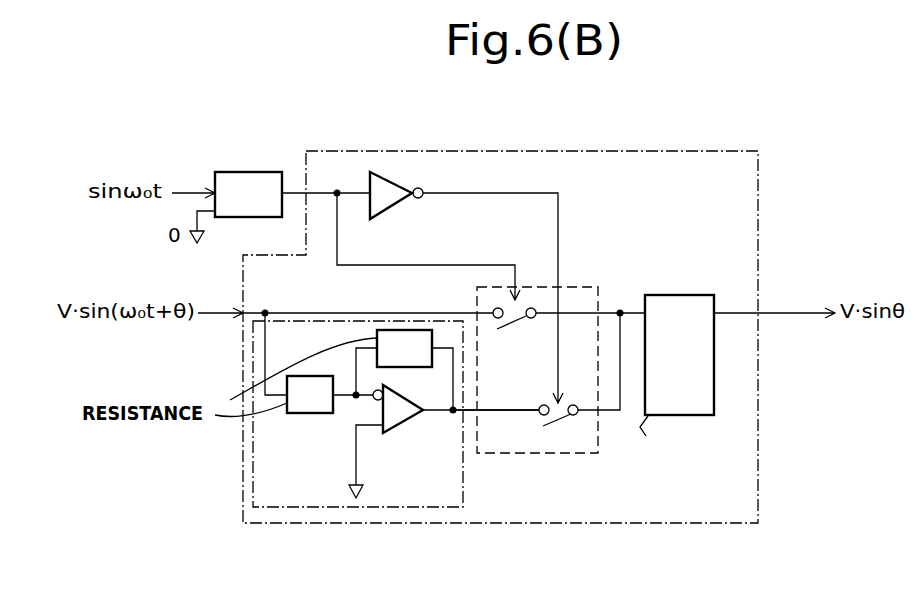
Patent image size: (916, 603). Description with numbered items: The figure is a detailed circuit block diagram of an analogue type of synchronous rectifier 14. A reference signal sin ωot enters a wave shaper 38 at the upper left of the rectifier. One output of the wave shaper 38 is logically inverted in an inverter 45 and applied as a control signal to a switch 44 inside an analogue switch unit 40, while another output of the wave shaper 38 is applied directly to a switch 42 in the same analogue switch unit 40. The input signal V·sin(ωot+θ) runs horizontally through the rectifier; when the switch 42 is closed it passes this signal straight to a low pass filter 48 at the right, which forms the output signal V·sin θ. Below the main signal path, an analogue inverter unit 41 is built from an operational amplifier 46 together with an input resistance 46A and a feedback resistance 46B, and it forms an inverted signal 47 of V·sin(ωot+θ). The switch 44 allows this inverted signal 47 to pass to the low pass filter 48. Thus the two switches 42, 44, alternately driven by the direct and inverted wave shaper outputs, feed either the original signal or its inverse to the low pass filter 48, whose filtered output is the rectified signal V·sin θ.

The synchronous rectifier 14 is at (657, 150).
The wave shaper 38 is at (250, 172).
The analogue switch unit 40 is at (598, 292).
The analogue inverter unit 41 is at (272, 508).
The switch 42 is at (521, 309).
The switch 44 is at (560, 418).
The inverter 45 is at (397, 178).
The operational amplifier 46 is at (410, 420).
The input resistance 46A is at (310, 413).
The feedback resistance 46B is at (395, 330).
The inverted signal 47 is at (470, 412).
The low pass filter 48 is at (676, 295).